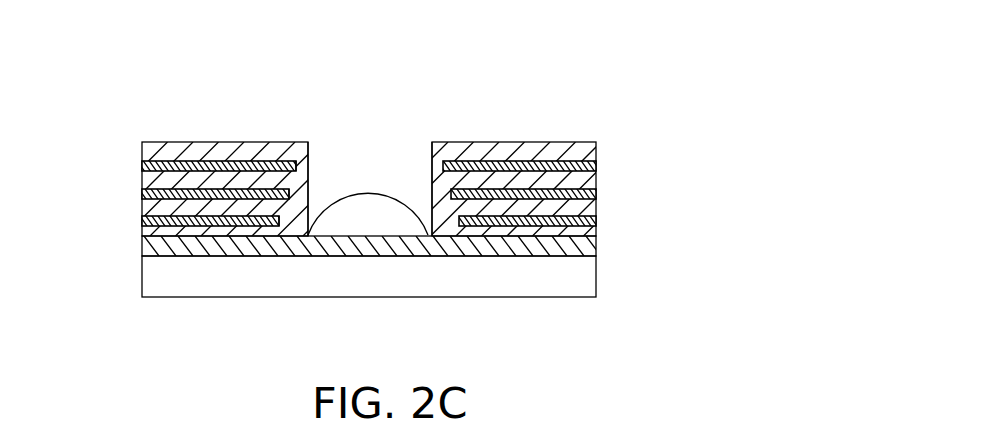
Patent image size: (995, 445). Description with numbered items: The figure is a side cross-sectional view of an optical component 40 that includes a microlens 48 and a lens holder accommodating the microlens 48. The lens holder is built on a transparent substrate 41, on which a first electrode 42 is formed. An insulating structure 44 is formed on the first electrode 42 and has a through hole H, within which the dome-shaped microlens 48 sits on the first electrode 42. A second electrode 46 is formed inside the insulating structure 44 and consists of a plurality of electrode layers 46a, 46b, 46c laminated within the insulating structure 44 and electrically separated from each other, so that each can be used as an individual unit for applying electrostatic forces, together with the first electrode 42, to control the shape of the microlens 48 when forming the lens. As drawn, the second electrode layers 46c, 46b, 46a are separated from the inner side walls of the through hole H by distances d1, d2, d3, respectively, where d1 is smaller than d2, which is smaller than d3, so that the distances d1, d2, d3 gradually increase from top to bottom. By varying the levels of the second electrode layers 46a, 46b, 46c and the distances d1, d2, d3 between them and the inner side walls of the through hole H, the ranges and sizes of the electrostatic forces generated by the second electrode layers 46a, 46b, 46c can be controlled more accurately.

The optical component 40 is at (522, 103).
The transparent substrate 41 is at (587, 287).
The first electrode 42 is at (596, 243).
The insulating structure 44 is at (163, 143).
The second electrode 46 is at (431, 183).
The second electrode layer 46a is at (596, 217).
The second electrode layer 46b is at (596, 190).
The second electrode layer 46c is at (596, 163).
The microlens 48 is at (361, 212).
The through hole H is at (383, 151).
The distance d1 is at (303, 149).
The distance d2 is at (290, 193).
The distance d3 is at (286, 219).